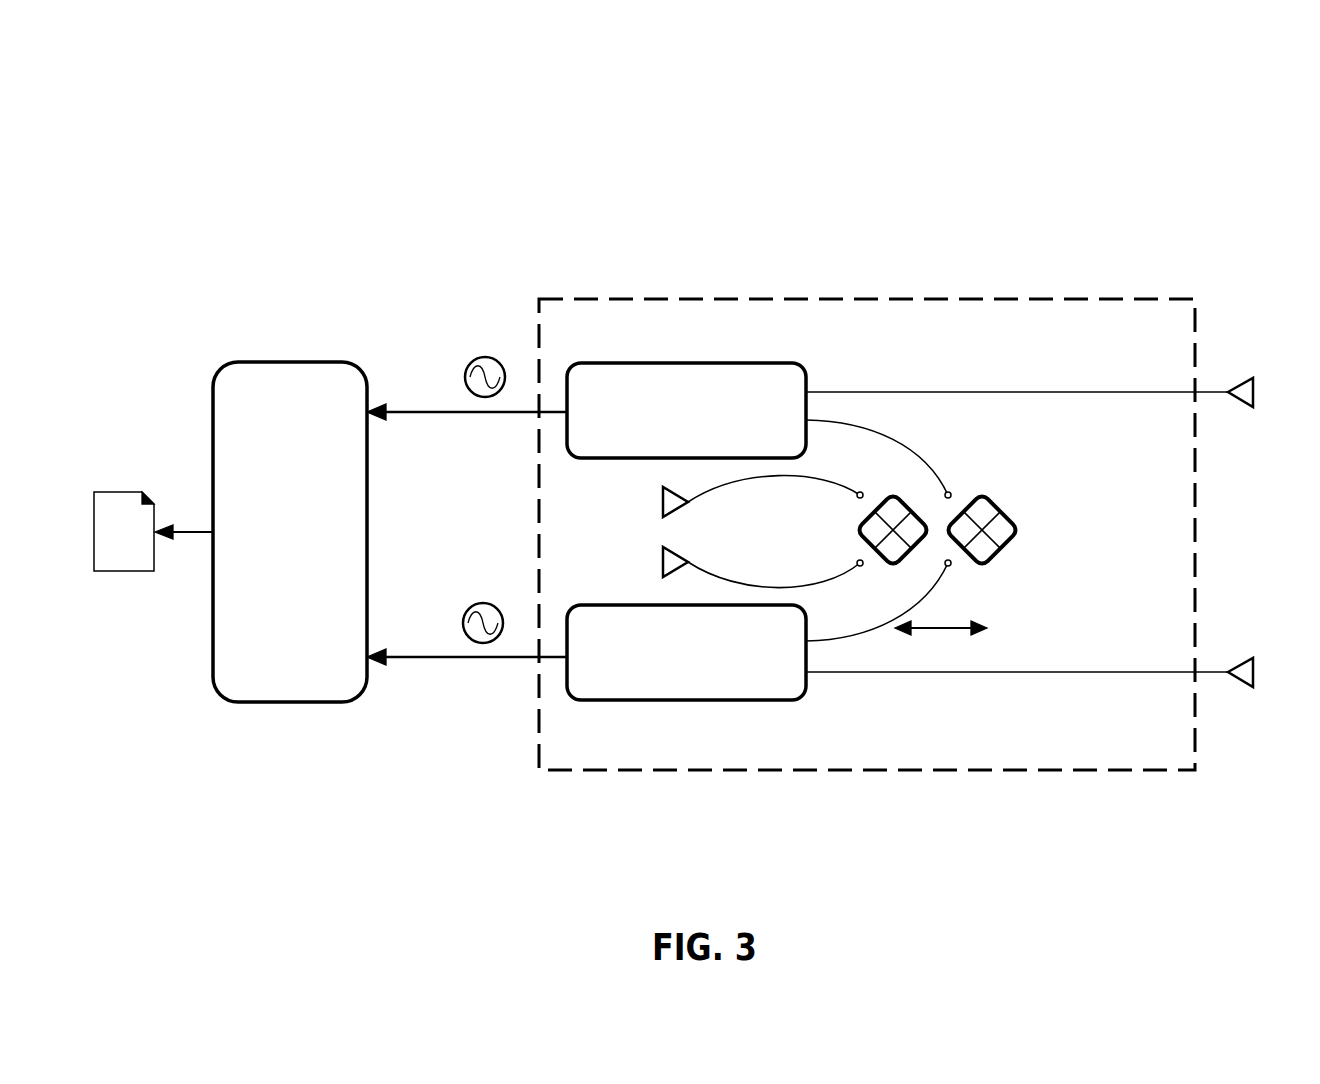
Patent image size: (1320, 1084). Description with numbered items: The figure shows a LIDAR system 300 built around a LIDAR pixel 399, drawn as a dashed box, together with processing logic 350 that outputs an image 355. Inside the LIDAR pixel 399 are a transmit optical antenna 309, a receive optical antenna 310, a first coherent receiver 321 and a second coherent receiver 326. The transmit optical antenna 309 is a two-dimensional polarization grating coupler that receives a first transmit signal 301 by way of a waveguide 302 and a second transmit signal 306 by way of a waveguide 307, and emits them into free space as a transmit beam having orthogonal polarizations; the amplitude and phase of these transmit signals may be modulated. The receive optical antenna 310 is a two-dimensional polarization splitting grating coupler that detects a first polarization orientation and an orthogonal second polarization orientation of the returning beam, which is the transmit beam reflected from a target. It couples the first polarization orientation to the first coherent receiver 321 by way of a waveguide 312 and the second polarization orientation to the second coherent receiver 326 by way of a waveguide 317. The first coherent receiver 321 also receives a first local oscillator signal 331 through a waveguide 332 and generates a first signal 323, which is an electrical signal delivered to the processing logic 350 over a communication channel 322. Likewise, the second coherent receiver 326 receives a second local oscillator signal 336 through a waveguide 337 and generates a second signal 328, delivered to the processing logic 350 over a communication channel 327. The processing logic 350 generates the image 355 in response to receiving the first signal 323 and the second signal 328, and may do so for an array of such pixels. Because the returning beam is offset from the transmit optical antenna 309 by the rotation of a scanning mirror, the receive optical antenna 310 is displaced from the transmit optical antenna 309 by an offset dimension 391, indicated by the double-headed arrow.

The LIDAR system 300 is at (1308, 66).
The LIDAR pixel 399 is at (539, 298).
The processing logic 350 is at (333, 547).
The image 355 is at (138, 549).
The first coherent receiver 321 is at (753, 437).
The second coherent receiver 326 is at (753, 679).
The first signal 323 is at (471, 359).
The second signal 328 is at (469, 605).
The communication channel 322 is at (465, 420).
The communication channel 327 is at (495, 662).
The waveguide 332 is at (905, 387).
The waveguide 337 is at (946, 678).
The first local oscillator signal 331 is at (1252, 377).
The second local oscillator signal 336 is at (1252, 657).
The first transmit signal TX1 301 is at (663, 492).
The second transmit signal TX2 306 is at (663, 555).
The waveguide 302 is at (801, 484).
The waveguide 307 is at (820, 574).
The waveguide 312 is at (905, 443).
The waveguide 317 is at (855, 637).
The transmit optical antenna 309 is at (892, 565).
The receive optical antenna 310 is at (1010, 512).
The offset dimension 391 is at (945, 632).